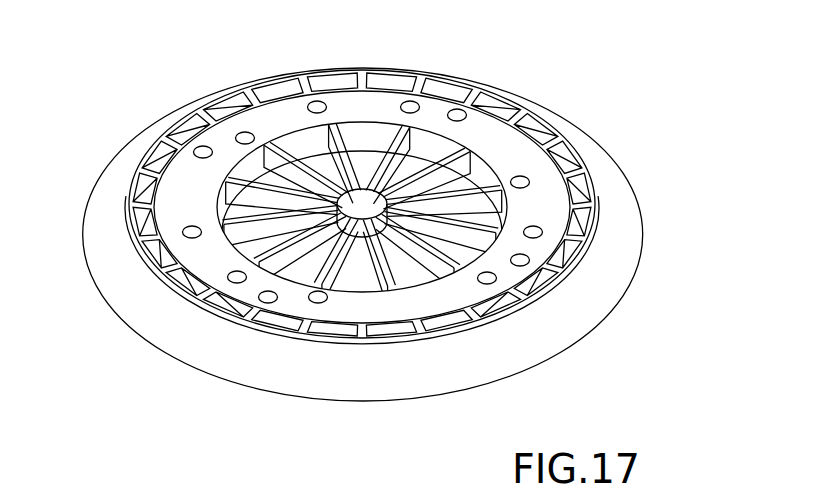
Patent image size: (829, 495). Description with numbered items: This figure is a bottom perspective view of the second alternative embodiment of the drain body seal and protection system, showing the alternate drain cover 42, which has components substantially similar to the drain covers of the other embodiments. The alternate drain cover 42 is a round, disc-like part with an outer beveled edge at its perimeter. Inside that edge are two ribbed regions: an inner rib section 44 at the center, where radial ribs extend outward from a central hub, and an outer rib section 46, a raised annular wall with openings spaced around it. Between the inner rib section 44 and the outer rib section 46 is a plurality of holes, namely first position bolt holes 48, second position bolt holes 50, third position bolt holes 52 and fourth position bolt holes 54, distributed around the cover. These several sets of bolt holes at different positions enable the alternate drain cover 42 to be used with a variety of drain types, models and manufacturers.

The alternate drain cover 42 is at (618, 197).
The inner rib section 44 is at (466, 170).
The outer rib section 46 is at (547, 143).
The first position bolt holes 48 is at (200, 152).
The second position bolt holes 50 is at (314, 108).
The third position bolt holes 52 is at (407, 107).
The fourth position bolt holes 54 is at (244, 137).